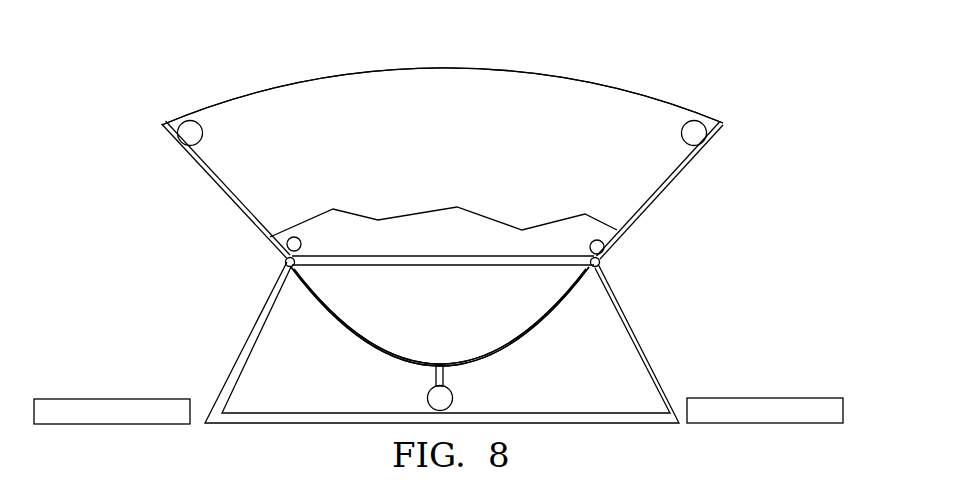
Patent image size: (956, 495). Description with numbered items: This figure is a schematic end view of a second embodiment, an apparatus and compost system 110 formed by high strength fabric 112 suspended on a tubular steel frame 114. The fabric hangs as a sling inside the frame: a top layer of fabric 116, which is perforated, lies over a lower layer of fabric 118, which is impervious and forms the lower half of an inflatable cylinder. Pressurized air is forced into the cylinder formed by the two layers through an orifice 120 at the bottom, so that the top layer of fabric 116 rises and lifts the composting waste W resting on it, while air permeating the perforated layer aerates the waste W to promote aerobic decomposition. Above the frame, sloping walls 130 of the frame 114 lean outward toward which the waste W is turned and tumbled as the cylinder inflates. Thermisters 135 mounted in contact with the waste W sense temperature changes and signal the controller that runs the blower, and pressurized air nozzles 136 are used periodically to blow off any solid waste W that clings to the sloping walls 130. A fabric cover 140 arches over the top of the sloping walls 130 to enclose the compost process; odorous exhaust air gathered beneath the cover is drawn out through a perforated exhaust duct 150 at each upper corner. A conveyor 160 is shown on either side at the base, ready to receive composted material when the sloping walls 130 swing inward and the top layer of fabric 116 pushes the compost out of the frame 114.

The apparatus and compost system 110 is at (440, 76).
The high strength fabric 112 is at (435, 316).
The tubular steel frame 114 is at (640, 347).
The top layer of fabric 116 is at (538, 326).
The lower layer of fabric 118 is at (490, 357).
The orifice 120 is at (428, 397).
The sloping walls 130 is at (220, 195).
The thermisters 135 is at (605, 250).
The pressurized air nozzles 136 is at (287, 245).
The fabric cover 140 is at (462, 67).
The perforated exhaust duct 150 is at (187, 133).
The conveyor 160 is at (105, 400).
The waste W is at (378, 205).